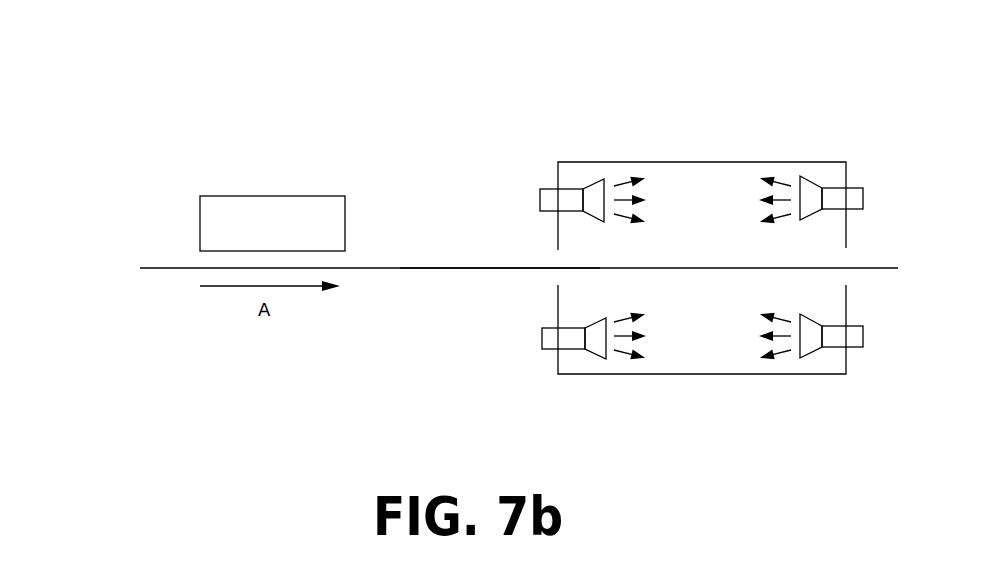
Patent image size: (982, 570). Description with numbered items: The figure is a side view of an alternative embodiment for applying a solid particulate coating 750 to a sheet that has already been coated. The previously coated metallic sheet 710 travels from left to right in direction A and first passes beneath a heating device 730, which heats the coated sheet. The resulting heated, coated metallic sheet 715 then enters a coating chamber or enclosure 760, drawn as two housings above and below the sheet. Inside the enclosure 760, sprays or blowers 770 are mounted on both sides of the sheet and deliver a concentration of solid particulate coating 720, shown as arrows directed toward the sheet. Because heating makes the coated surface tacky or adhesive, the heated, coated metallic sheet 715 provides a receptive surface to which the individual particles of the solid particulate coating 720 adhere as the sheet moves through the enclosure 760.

The solid particulate coating embodiment 750 is at (208, 72).
The previously coated metallic sheet 710 is at (177, 266).
The heated, coated metallic sheet 715 is at (473, 266).
The heating device 730 is at (275, 196).
The coating chamber or enclosure 760 is at (597, 160).
The sprays or blowers 770 is at (542, 338).
The solid particulate coating 720 is at (634, 181).